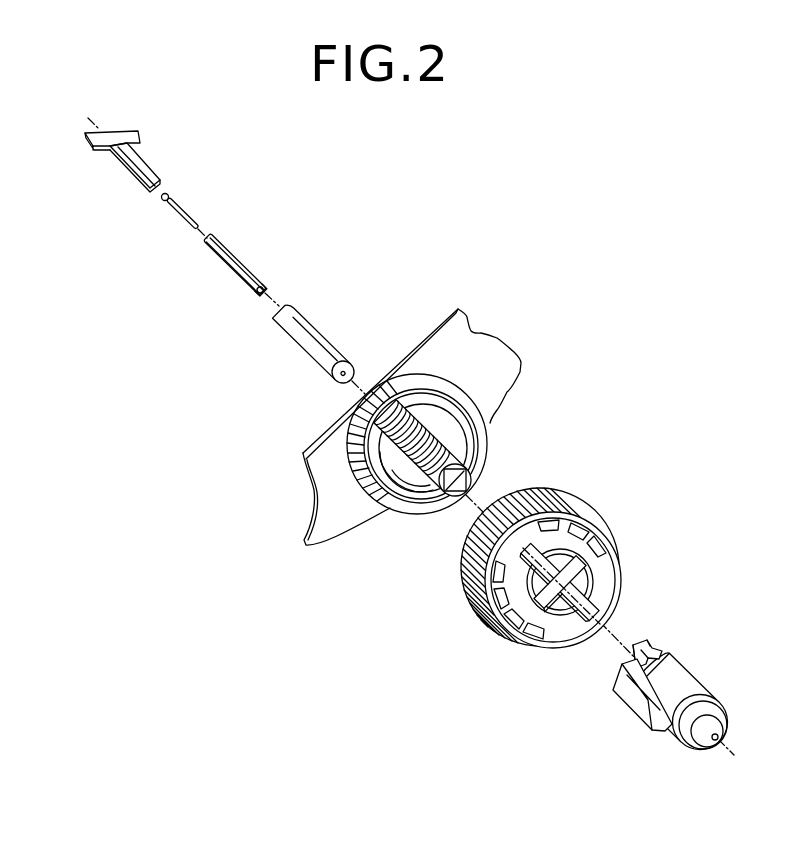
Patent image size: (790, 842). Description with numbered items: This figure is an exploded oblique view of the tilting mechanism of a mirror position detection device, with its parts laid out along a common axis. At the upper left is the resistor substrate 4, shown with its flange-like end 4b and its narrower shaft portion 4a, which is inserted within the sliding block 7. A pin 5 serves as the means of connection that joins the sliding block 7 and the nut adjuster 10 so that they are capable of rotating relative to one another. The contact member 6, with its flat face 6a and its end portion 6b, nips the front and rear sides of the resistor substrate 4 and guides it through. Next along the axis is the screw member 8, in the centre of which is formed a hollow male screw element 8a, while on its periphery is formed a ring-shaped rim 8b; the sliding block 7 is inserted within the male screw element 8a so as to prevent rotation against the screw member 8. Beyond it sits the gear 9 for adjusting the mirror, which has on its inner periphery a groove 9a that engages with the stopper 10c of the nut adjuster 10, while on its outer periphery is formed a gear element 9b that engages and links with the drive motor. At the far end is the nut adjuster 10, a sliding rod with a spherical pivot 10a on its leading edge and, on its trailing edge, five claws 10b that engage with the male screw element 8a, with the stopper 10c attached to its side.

The resistor substrate 4 is at (150, 159).
The shaft portion 4a is at (162, 162).
The flange portion 4b is at (144, 124).
The pin 5 is at (202, 197).
The contact member 6 is at (271, 241).
The flat portion 6a is at (254, 224).
The end portion 6b is at (296, 271).
The sliding block 7 is at (324, 328).
The screw member 8 is at (434, 400).
The male screw element 8a is at (469, 451).
The ring-shaped rim 8b is at (417, 384).
The gear 9 is at (514, 546).
The groove 9a is at (502, 582).
The gear element 9b is at (518, 567).
The nut adjuster 10 is at (659, 682).
The spherical pivot 10a is at (688, 744).
The claws 10b is at (678, 623).
The stopper 10c is at (618, 705).